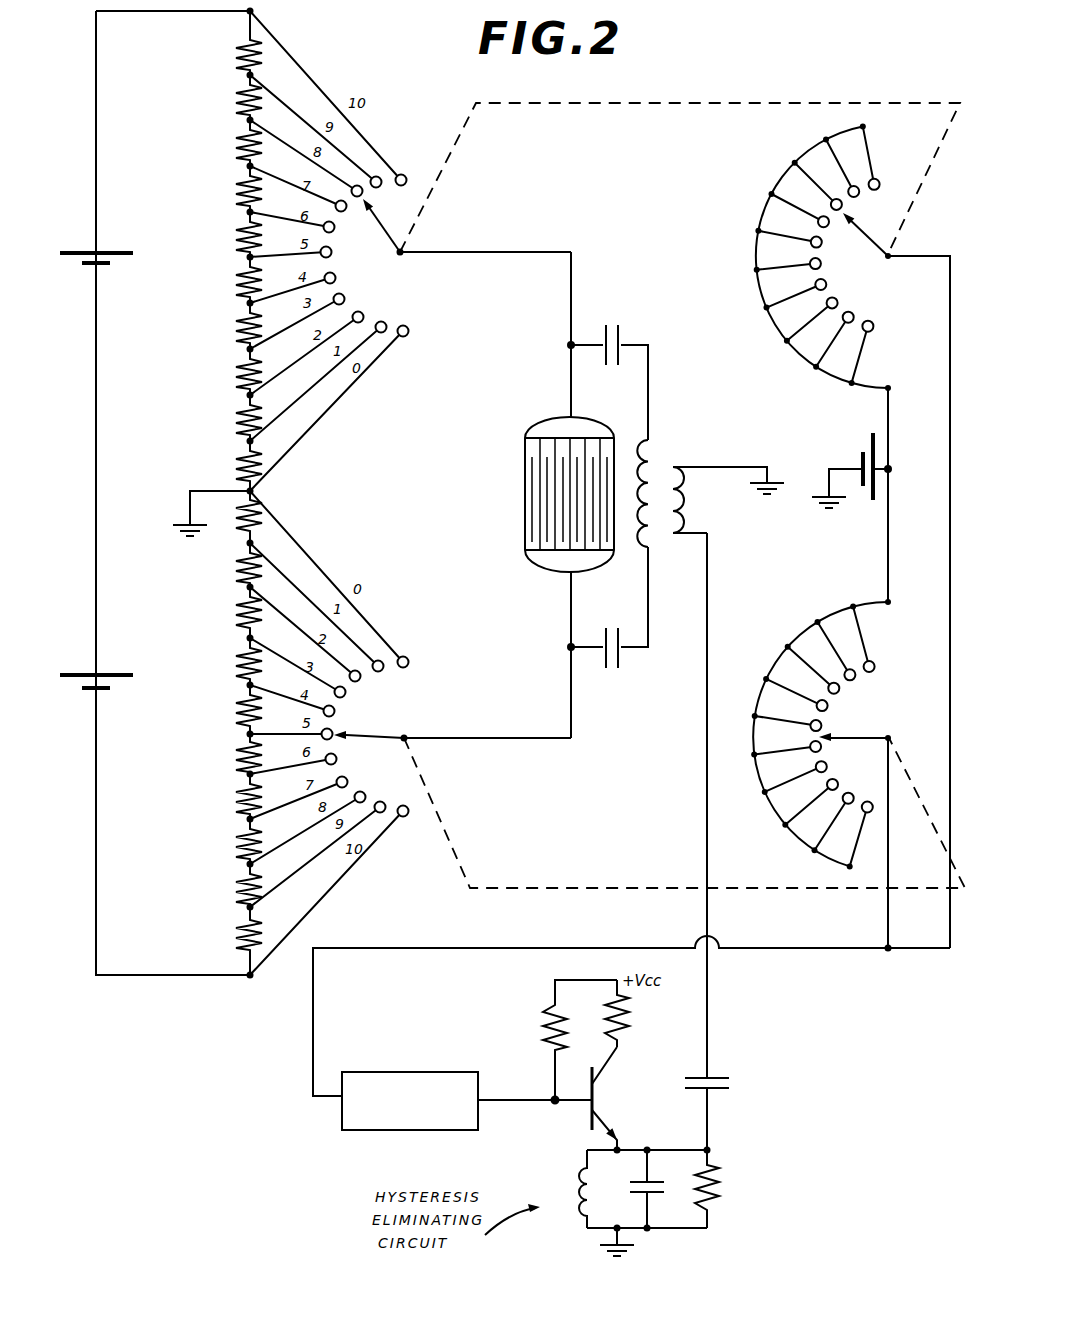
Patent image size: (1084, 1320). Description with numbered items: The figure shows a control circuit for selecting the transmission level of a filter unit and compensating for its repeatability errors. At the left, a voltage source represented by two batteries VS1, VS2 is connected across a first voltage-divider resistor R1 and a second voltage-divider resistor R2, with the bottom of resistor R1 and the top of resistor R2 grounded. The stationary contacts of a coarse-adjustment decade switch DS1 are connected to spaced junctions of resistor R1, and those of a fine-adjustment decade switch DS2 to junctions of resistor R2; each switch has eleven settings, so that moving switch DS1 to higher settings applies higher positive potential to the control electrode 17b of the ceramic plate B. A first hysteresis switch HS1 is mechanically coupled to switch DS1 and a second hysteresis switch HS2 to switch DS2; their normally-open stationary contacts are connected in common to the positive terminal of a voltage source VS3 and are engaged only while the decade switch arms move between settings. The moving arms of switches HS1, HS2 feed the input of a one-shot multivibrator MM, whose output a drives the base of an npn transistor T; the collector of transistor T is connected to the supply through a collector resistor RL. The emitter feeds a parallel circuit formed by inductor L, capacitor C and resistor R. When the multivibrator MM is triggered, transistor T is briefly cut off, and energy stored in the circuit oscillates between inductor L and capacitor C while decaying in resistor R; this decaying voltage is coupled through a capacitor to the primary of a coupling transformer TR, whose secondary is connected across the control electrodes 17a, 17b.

The control electrode 17a is at (566, 563).
The control electrode 17b is at (546, 420).
The discharge tube B is at (525, 494).
The first voltage-divider resistor R1 is at (236, 254).
The second voltage-divider resistor R2 is at (236, 748).
The voltage-source battery VS1 is at (103, 244).
The voltage-source battery VS2 is at (103, 668).
The voltage source VS3 is at (851, 470).
The coarse-adjustment decade switch DS1 is at (410, 267).
The fine-adjustment decade switch DS2 is at (401, 706).
The first hysteresis switch HS1 is at (852, 535).
The second hysteresis switch HS2 is at (839, 775).
The coupling transformer TR is at (661, 470).
The one-shot multivibrator MM is at (428, 1046).
The output of the one-shot multivibrator a is at (518, 1098).
The npn transistor T is at (601, 1104).
The collector resistor RL is at (626, 1032).
The resistor R is at (717, 1189).
The inductor L is at (573, 1190).
The capacitor C is at (647, 1189).